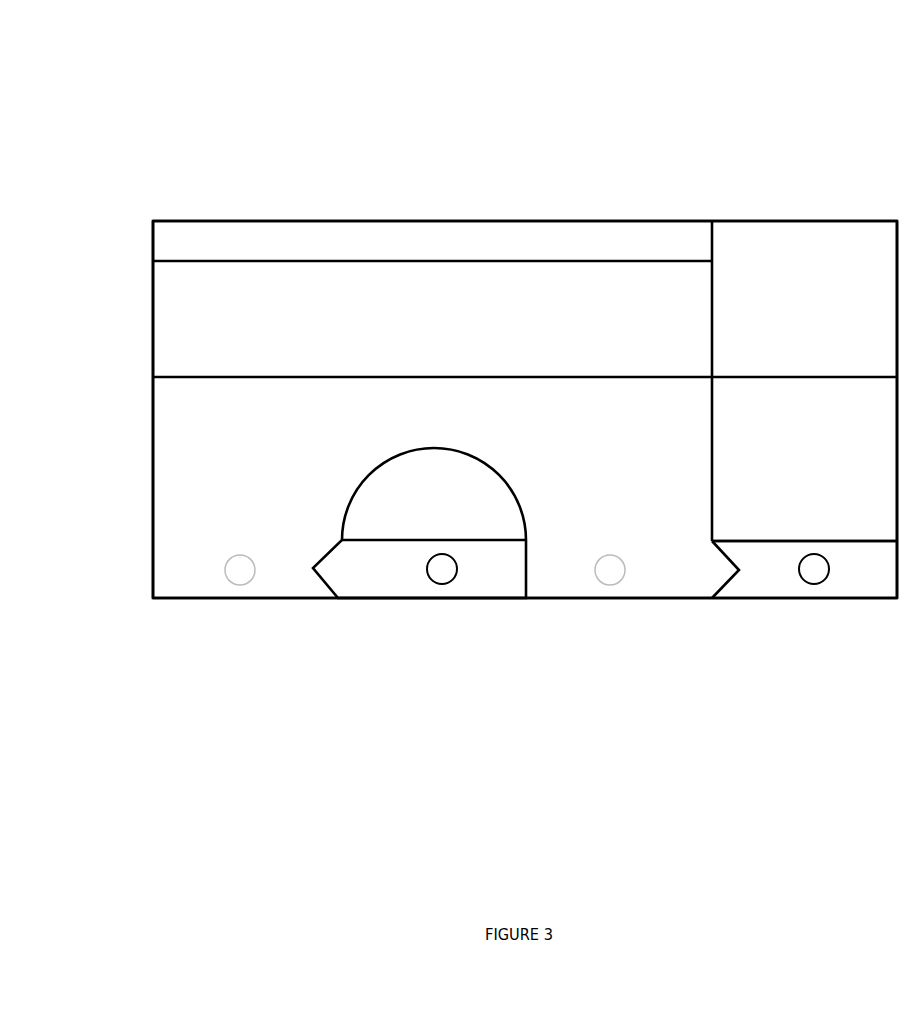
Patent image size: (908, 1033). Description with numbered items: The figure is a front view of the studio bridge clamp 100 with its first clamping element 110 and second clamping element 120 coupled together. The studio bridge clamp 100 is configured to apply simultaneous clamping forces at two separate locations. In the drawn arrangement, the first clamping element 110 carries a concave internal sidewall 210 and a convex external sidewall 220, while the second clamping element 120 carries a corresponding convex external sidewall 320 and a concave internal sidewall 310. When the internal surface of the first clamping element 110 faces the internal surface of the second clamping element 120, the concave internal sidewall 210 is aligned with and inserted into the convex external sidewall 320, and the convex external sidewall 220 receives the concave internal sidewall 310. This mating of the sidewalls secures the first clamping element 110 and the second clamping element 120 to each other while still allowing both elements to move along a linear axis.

The studio bridge clamp 100 is at (116, 81).
The first clamping element 110 is at (787, 238).
The second clamping element 120 is at (293, 297).
The concave internal sidewall 210 is at (732, 585).
The convex external sidewall 220 is at (337, 580).
The concave internal sidewall 310 is at (208, 580).
The convex external sidewall 320 is at (718, 565).